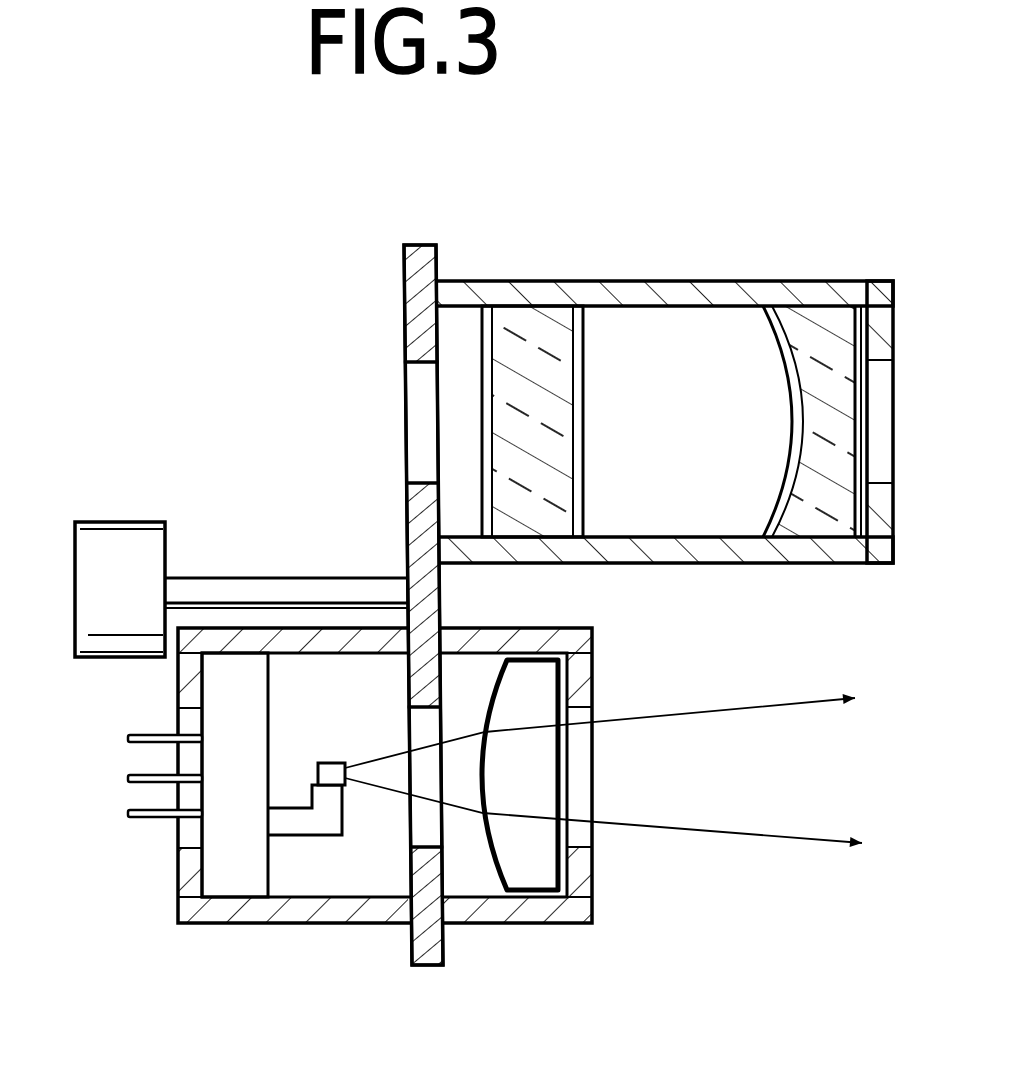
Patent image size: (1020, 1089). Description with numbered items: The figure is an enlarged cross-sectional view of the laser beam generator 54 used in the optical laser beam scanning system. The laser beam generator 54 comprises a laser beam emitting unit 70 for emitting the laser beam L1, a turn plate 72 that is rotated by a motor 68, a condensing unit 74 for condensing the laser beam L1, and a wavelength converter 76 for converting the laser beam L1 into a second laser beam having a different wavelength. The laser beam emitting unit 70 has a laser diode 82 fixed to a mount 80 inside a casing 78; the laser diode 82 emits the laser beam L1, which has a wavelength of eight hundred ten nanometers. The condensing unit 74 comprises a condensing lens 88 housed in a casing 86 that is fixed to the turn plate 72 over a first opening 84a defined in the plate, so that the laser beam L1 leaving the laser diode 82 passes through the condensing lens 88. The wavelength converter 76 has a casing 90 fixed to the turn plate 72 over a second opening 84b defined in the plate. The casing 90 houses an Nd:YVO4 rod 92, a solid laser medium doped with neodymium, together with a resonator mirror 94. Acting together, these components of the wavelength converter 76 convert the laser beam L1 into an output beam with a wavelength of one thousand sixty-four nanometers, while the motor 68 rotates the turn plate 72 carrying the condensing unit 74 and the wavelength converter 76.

The laser beam generator 54 is at (691, 380).
The motor 68 is at (125, 548).
The laser beam emitting unit 70 is at (392, 832).
The turn plate 72 is at (420, 292).
The condensing unit 74 is at (533, 922).
The wavelength converter 76 is at (811, 282).
The casing 78 is at (287, 923).
The mount 80 is at (228, 863).
The laser diode 82 is at (325, 763).
The first opening 84a is at (412, 830).
The second opening 84b is at (420, 440).
The casing 86 is at (580, 903).
The condensing lens 88 is at (553, 832).
The casing 90 is at (828, 553).
The Nd:YVO4 rod 92 is at (525, 325).
The resonator mirror 94 is at (842, 452).
The laser beam L1 is at (770, 838).